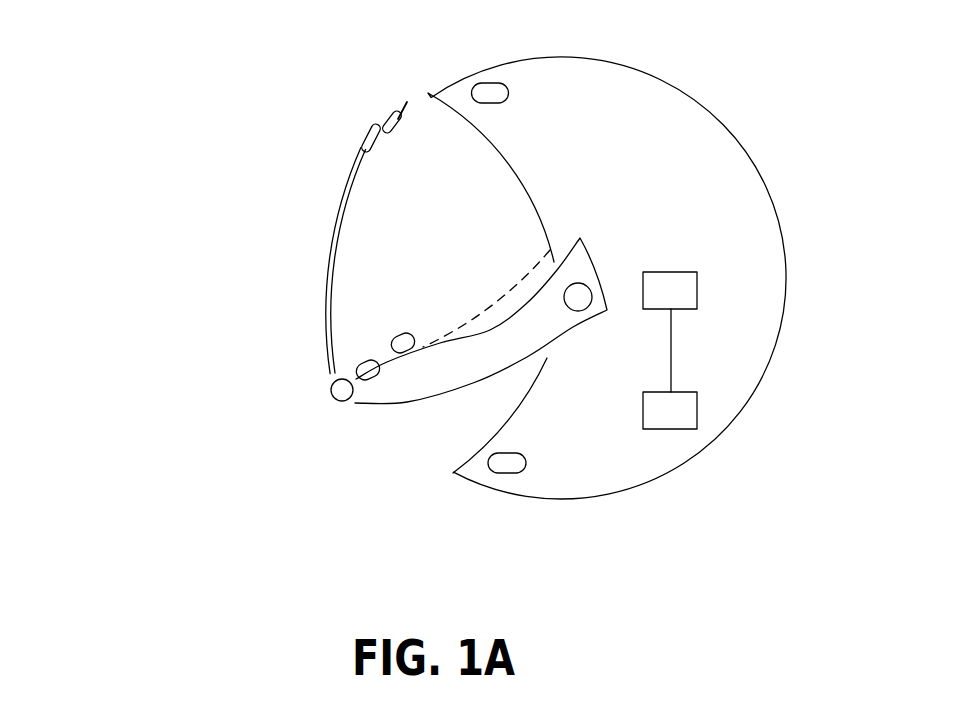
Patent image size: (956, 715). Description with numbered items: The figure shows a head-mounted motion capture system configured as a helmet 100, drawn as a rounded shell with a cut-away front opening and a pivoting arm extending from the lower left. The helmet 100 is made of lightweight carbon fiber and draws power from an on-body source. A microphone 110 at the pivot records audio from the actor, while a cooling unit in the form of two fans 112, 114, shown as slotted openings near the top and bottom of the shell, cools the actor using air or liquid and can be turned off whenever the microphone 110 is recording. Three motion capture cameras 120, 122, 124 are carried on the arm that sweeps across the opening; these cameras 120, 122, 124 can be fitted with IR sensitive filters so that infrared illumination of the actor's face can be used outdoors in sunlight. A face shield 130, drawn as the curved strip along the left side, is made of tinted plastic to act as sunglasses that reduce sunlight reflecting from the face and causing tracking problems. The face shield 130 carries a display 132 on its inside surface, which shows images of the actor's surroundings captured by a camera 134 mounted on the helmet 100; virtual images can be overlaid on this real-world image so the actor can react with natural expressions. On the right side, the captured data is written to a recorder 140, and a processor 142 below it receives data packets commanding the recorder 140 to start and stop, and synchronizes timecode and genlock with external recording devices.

The helmet 100 is at (130, 90).
The microphone 110 is at (342, 390).
The fan 112 is at (490, 83).
The fan 114 is at (507, 474).
The motion capture camera 120 is at (396, 127).
The motion capture camera 122 is at (398, 333).
The motion capture camera 124 is at (368, 360).
The face shield 130 is at (407, 102).
The display 132 is at (330, 262).
The camera 134 is at (366, 133).
The recorder 140 is at (697, 292).
The processor 142 is at (697, 410).